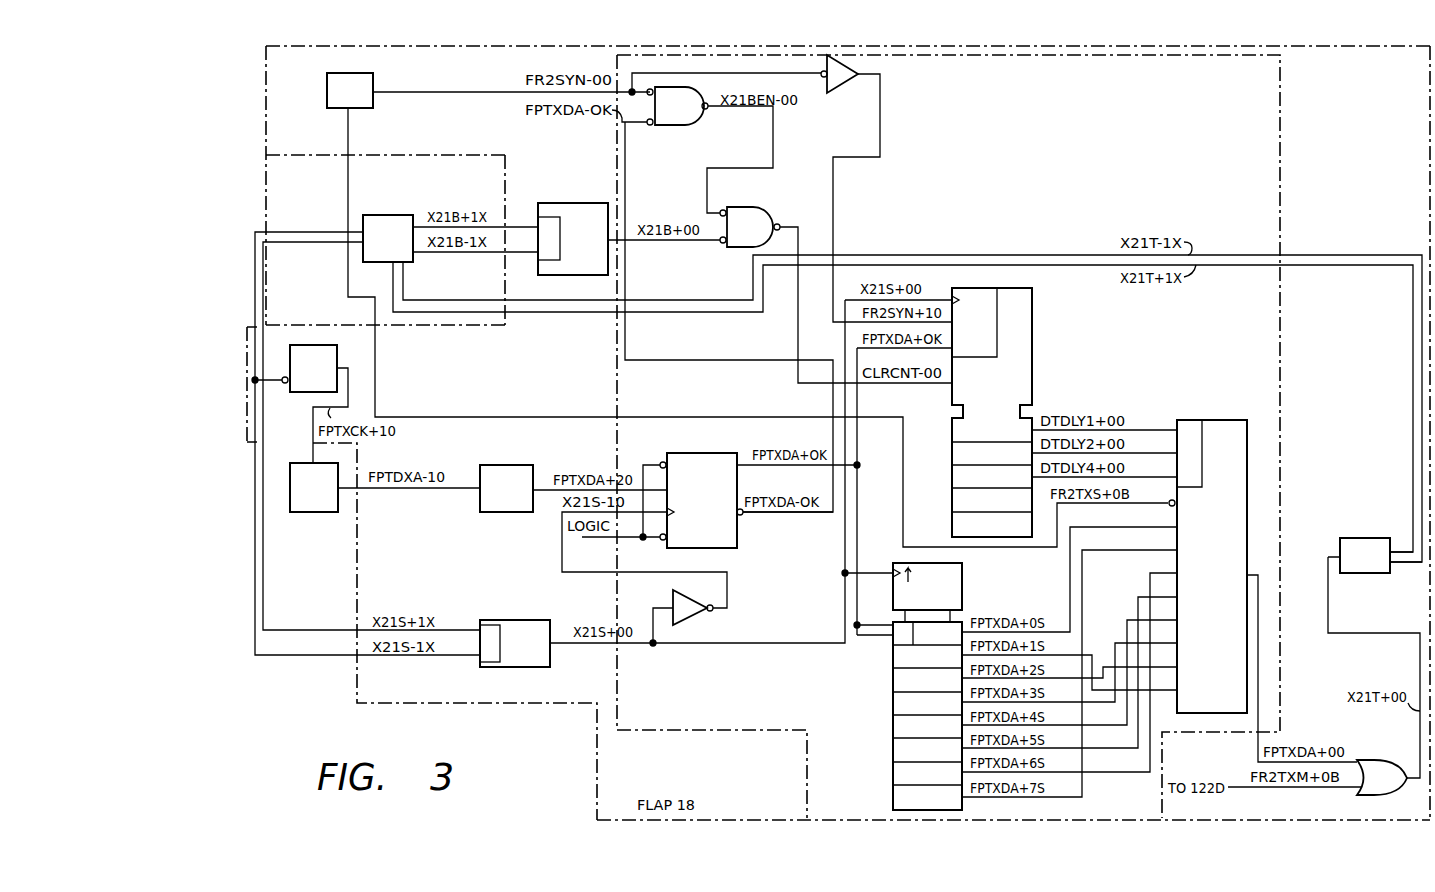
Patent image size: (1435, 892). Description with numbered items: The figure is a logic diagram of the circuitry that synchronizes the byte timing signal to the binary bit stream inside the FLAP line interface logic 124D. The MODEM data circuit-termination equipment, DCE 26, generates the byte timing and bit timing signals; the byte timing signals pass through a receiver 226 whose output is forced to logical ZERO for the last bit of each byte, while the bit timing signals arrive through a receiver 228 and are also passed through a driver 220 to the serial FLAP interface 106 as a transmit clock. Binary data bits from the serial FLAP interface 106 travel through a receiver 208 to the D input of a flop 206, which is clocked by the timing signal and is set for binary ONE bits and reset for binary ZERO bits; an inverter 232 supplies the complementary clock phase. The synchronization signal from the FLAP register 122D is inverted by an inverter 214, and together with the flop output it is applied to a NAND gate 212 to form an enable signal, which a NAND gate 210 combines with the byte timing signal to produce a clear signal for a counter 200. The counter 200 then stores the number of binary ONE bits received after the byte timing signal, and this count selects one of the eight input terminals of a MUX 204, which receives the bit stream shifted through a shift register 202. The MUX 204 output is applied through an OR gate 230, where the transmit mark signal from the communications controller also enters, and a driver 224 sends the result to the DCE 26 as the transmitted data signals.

The FLAP register 122D is at (373, 77).
The DCE 26 is at (405, 215).
The receiver 226 is at (560, 203).
The NAND gate 212 is at (695, 127).
The inverter 214 is at (841, 94).
The NAND gate 210 is at (762, 207).
The FLAP line interface logic 124D is at (1281, 187).
The counter 200 is at (1032, 337).
The MUX 204 is at (1207, 420).
The shift register 202 is at (890, 772).
The flop 206 is at (737, 540).
The inverter 232 is at (697, 612).
The driver 220 is at (305, 392).
The serial FLAP interface 106 is at (305, 512).
The receiver 208 is at (505, 512).
The receiver 228 is at (541, 601).
The driver 224 is at (1345, 538).
The OR gate 230 is at (1363, 797).